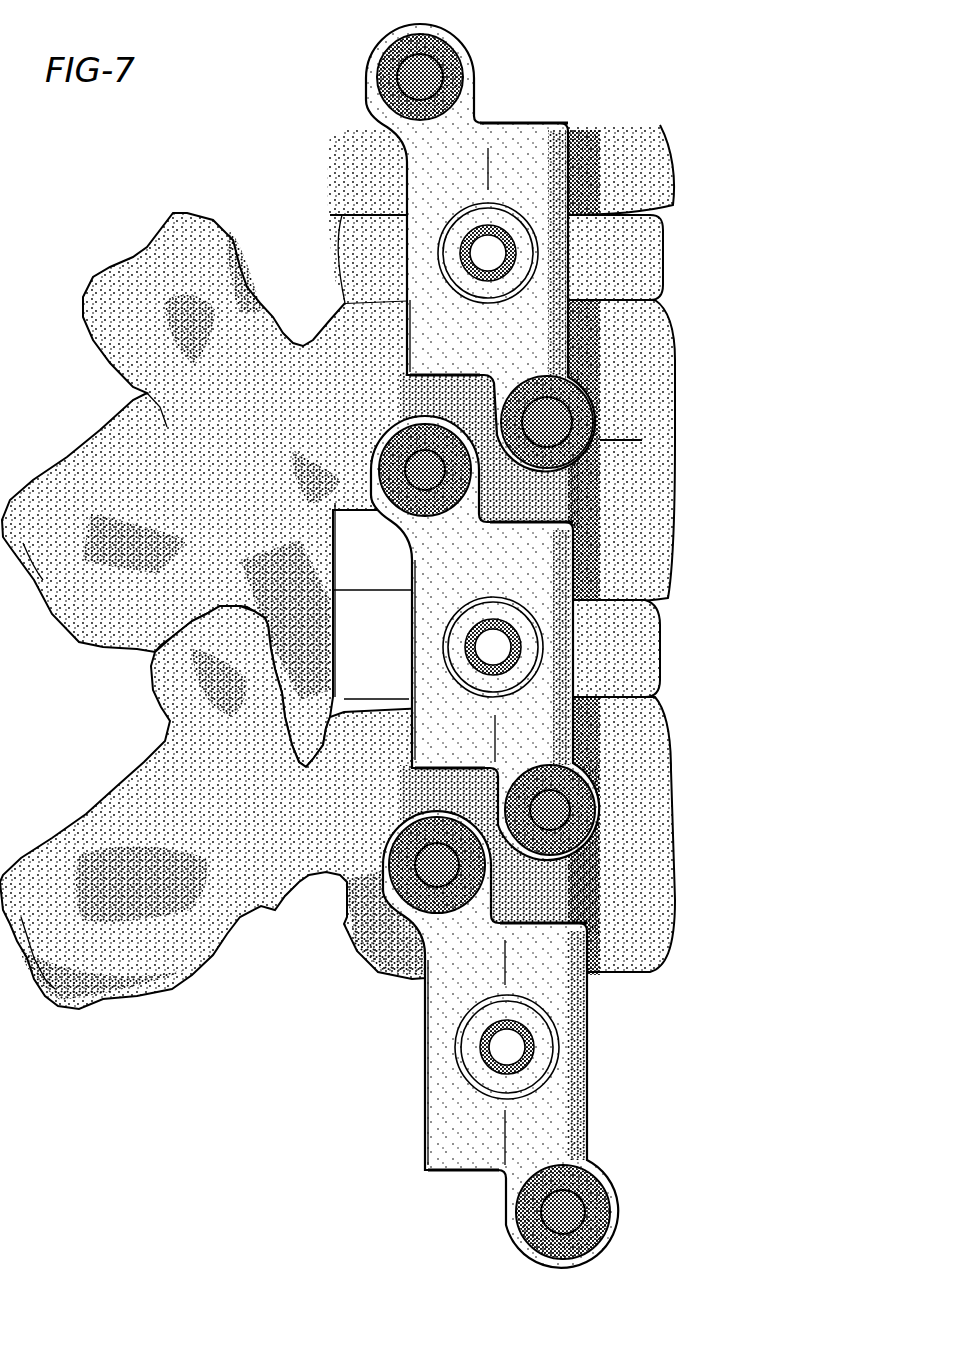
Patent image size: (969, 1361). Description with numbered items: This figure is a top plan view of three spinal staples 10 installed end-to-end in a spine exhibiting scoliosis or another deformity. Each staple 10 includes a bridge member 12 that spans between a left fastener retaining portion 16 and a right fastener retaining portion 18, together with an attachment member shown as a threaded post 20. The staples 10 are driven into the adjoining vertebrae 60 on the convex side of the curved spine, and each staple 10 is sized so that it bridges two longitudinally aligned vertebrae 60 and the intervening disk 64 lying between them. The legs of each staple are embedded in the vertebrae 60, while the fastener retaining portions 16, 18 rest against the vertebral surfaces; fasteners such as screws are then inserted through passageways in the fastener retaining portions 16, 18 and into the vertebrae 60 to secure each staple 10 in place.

The spinal staple 10 is at (520, 133).
The bridge member 12 is at (535, 735).
The left fastener retaining portion 16 is at (378, 69).
The right fastener retaining portion 18 is at (637, 438).
The threaded post 20 is at (475, 1050).
The vertebrae 60 is at (663, 176).
The intervening disk 64 is at (665, 260).